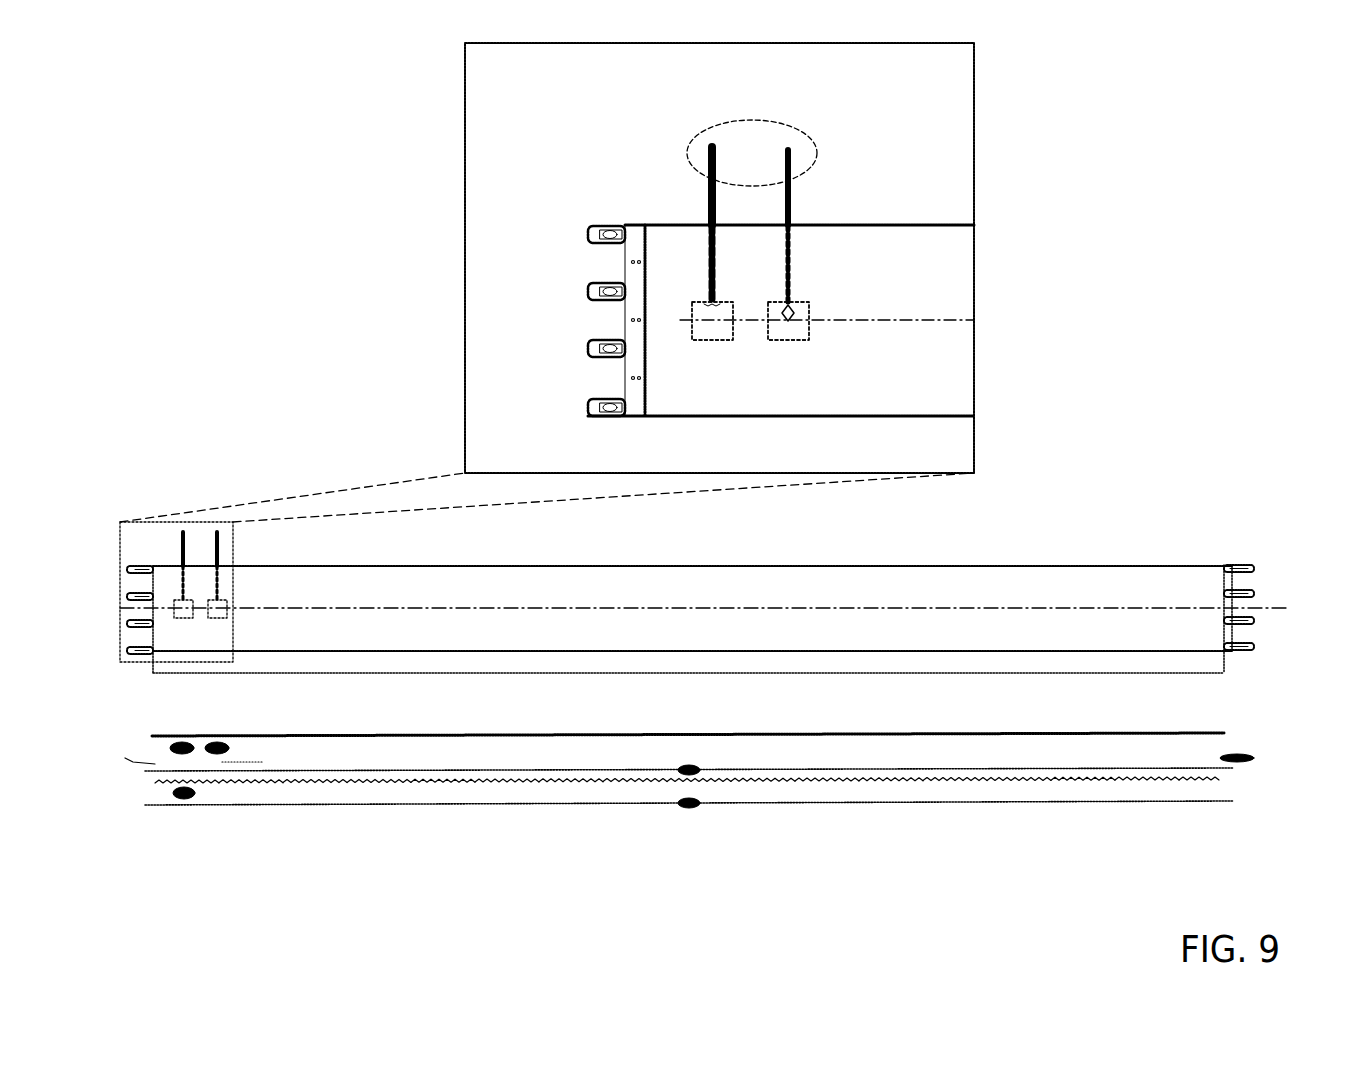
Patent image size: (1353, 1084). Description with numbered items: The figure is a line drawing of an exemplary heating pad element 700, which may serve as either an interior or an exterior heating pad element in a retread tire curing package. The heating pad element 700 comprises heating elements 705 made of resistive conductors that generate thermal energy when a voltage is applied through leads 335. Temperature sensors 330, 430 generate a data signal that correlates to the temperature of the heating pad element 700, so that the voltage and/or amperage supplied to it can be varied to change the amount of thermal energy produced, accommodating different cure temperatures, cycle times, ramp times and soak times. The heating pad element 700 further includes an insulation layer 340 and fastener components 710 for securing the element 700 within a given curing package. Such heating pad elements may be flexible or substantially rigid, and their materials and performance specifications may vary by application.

The heating pad element 700 is at (205, 148).
The fastener components 710 is at (588, 409).
The leads 335 is at (818, 153).
The temperature sensor 330 is at (802, 302).
The temperature sensor 430 is at (750, 321).
The insulation layer 340 is at (618, 734).
The heating element 705 is at (755, 783).